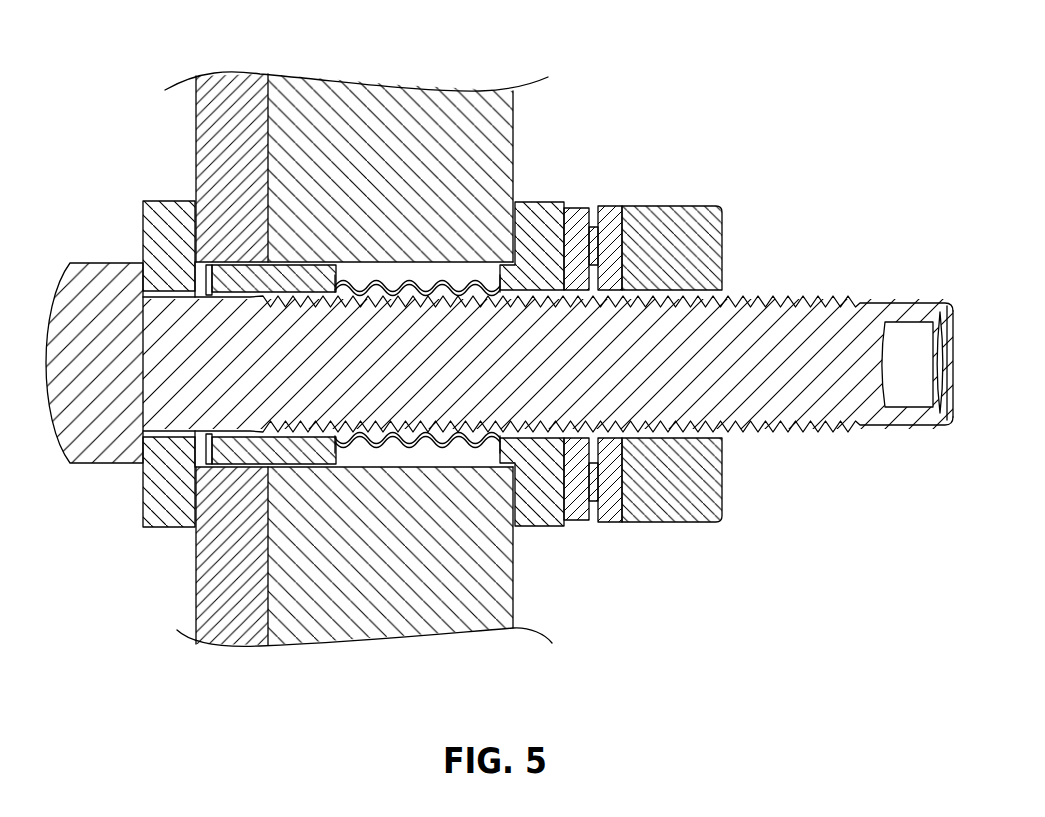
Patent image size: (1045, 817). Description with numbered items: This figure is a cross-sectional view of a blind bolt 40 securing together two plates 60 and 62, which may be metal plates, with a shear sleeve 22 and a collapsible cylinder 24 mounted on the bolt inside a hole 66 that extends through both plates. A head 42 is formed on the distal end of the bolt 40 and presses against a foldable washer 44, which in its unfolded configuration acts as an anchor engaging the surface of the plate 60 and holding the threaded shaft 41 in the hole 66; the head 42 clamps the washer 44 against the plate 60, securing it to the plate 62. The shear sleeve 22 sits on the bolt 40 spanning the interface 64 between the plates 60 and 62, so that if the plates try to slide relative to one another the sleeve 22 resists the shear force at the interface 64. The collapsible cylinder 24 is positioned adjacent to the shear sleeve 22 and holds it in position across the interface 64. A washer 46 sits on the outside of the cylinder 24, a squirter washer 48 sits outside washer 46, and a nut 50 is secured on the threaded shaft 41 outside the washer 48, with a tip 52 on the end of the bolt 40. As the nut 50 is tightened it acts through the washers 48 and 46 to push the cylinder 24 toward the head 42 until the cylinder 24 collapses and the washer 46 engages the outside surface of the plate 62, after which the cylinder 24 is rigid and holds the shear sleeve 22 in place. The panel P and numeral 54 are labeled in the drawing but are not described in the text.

The shear sleeve 22 is at (222, 262).
The collapsible cylinder 24 is at (462, 265).
The blind bolt 40 is at (548, 311).
The threaded shaft 41 is at (700, 285).
The head 42 is at (72, 404).
The foldable washer 44 is at (152, 503).
The washer 46 is at (535, 517).
The squirter washer 48 is at (589, 230).
The nut 50 is at (665, 523).
The tip 52 is at (917, 428).
The washer flange 54 is at (168, 303).
The plate 60 is at (237, 112).
The plate 62 is at (437, 132).
The interface 64 is at (270, 118).
The hole 66 is at (387, 456).
The panel P is at (240, 648).